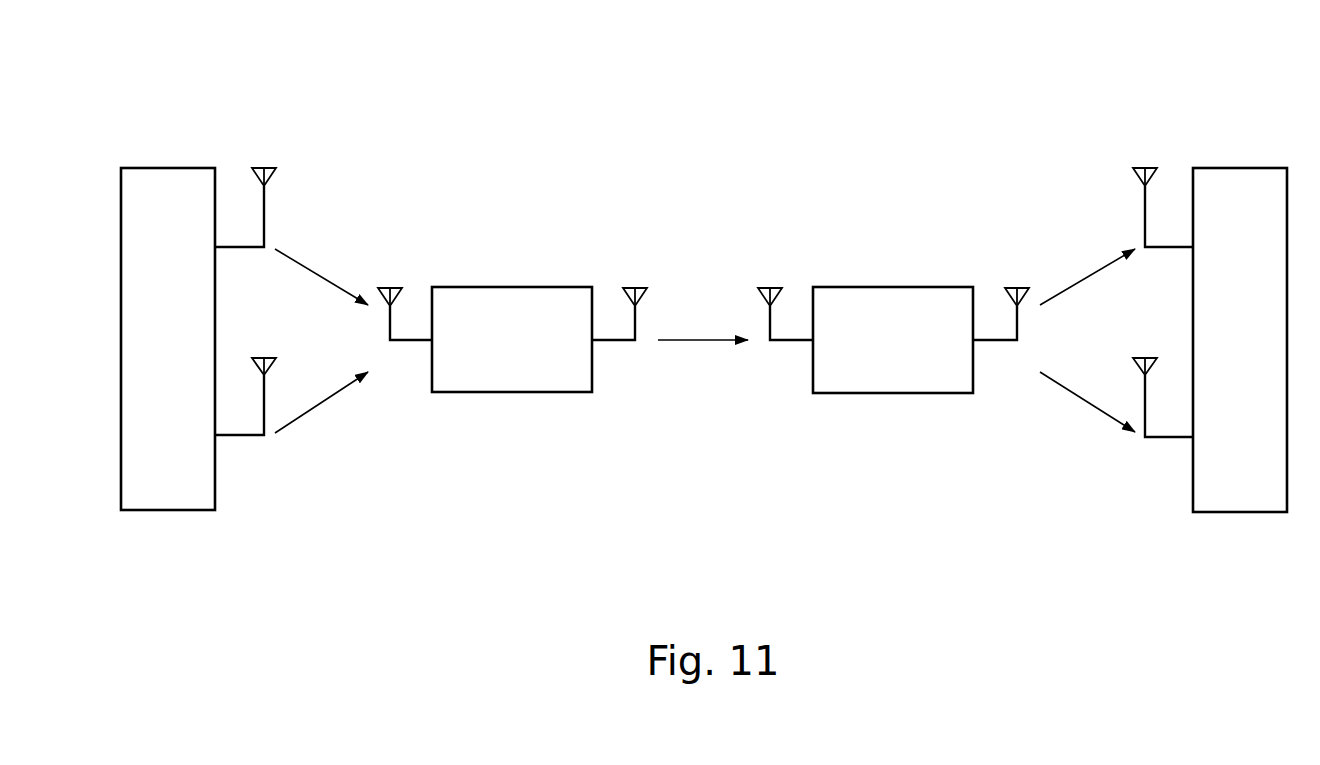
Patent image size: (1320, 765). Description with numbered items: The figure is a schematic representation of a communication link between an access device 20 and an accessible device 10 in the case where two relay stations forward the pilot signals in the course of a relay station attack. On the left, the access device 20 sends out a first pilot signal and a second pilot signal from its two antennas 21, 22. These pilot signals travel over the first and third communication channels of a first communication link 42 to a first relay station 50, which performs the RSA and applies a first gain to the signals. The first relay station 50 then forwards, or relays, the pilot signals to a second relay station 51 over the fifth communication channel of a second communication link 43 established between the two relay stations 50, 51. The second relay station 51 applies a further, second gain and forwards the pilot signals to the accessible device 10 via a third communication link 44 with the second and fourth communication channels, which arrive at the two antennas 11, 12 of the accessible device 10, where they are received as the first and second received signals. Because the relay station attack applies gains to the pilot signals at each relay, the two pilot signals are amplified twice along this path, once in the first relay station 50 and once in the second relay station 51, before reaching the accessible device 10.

The accessible device 10 is at (1210, 168).
The antenna 11 is at (1148, 168).
The antenna 12 is at (1148, 358).
The access device 20 is at (180, 168).
The antenna 21 is at (267, 168).
The antenna 22 is at (265, 358).
The first communication link 42 is at (352, 202).
The second communication link 43 is at (710, 268).
The third communication link 44 is at (1055, 200).
The first relay station 50 is at (512, 287).
The second relay station 51 is at (893, 287).